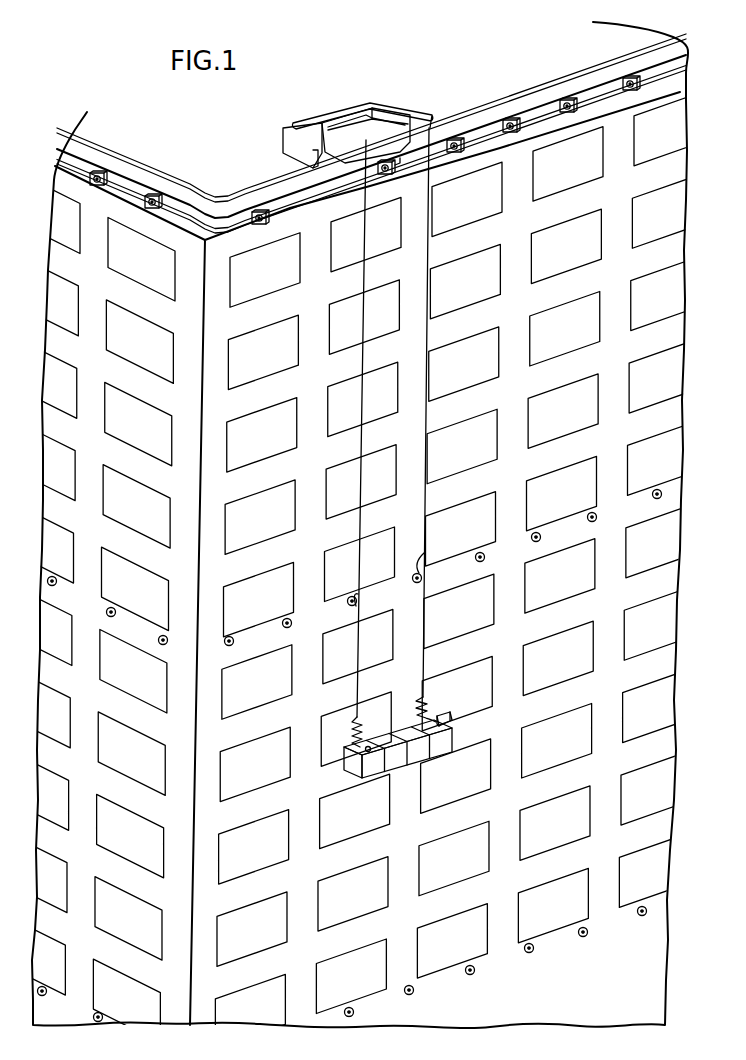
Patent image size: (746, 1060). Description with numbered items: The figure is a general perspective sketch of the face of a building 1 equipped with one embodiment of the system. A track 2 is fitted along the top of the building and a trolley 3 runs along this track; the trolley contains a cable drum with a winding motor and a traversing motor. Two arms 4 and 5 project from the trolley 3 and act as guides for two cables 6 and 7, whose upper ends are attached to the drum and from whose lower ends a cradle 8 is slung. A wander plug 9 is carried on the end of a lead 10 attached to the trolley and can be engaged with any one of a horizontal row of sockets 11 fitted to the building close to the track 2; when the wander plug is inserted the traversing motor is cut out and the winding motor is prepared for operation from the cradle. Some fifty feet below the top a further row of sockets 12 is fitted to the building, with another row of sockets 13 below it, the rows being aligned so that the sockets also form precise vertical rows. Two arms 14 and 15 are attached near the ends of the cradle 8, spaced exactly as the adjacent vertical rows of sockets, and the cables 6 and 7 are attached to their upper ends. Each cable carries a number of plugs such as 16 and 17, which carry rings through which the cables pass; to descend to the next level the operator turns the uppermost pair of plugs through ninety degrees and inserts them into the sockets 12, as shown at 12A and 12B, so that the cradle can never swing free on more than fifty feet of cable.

The building 1 is at (238, 170).
The track 2 is at (483, 130).
The trolley 3 is at (368, 125).
The arm 4 is at (338, 128).
The arm 5 is at (408, 108).
The cable 6 is at (360, 279).
The cable 7 is at (430, 247).
The cradle 8 is at (345, 766).
The wander plug 9 is at (392, 173).
The lead 10 is at (431, 142).
The sockets 11 is at (154, 196).
The sockets 12 is at (167, 645).
The inserted plug 12A is at (346, 601).
The inserted plug 12B is at (425, 556).
The sockets 13 is at (350, 1007).
The arm 14 is at (369, 746).
The arm 15 is at (448, 720).
The plug 16 is at (352, 718).
The plug 17 is at (427, 712).